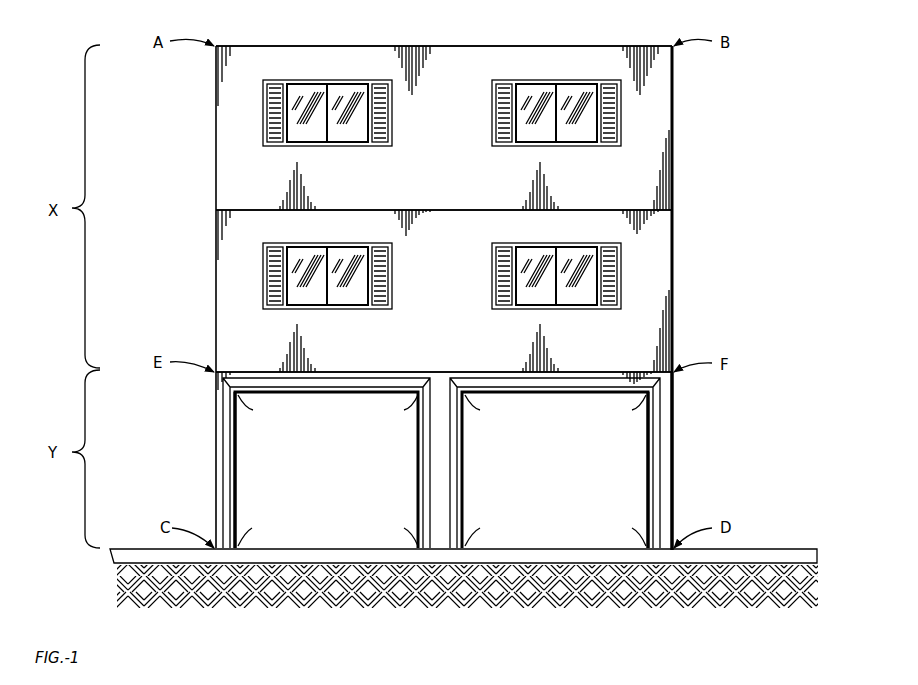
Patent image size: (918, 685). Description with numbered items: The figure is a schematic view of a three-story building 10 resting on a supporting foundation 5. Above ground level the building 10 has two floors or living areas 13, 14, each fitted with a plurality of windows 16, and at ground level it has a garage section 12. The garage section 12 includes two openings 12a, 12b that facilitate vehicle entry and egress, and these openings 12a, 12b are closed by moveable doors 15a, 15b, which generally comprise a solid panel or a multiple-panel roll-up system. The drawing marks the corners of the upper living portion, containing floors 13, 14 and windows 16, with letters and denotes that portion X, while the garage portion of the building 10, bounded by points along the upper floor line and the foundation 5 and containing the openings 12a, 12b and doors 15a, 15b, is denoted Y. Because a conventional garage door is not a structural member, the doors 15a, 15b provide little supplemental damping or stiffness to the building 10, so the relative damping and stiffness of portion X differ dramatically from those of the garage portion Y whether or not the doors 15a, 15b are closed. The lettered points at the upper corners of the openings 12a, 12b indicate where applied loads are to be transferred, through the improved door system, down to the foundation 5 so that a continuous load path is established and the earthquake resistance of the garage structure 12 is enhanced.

The foundation 5 is at (110, 556).
The three-story building 10 is at (716, 262).
The garage section 12 is at (673, 448).
The garage opening 12a is at (234, 462).
The garage opening 12b is at (656, 484).
The floor or living area 13 is at (214, 292).
The floor or living area 14 is at (214, 128).
The moveable door 15a is at (346, 468).
The moveable door 15b is at (573, 468).
The windows 16 is at (490, 148).